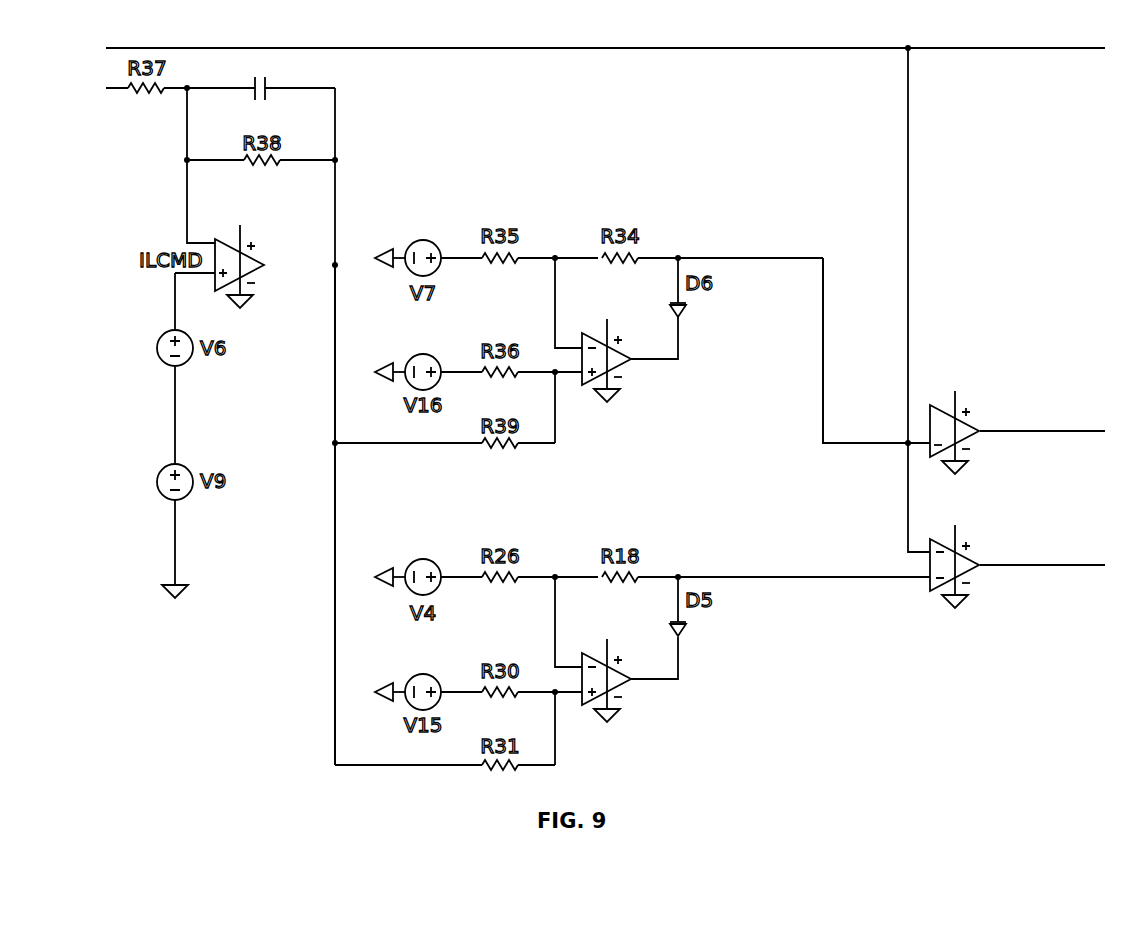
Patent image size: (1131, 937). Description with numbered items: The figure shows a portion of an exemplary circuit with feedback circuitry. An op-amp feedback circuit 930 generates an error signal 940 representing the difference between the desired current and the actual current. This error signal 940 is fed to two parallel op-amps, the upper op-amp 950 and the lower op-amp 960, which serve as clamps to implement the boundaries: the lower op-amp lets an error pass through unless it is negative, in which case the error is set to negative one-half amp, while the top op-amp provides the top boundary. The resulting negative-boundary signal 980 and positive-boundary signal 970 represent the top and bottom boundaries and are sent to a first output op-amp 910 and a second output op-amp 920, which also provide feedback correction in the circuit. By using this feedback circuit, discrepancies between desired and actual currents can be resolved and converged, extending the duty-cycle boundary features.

The comparator U5 910 is at (1010, 397).
The comparator U7 920 is at (1010, 532).
The error amplifier U9 930 is at (290, 222).
The error signal Qerr 940 is at (335, 503).
The amplifier U4 950 is at (615, 362).
The amplifier U3 960 is at (615, 682).
The signal ILTR+ 970 is at (862, 552).
The signal ILTR- 980 is at (862, 398).